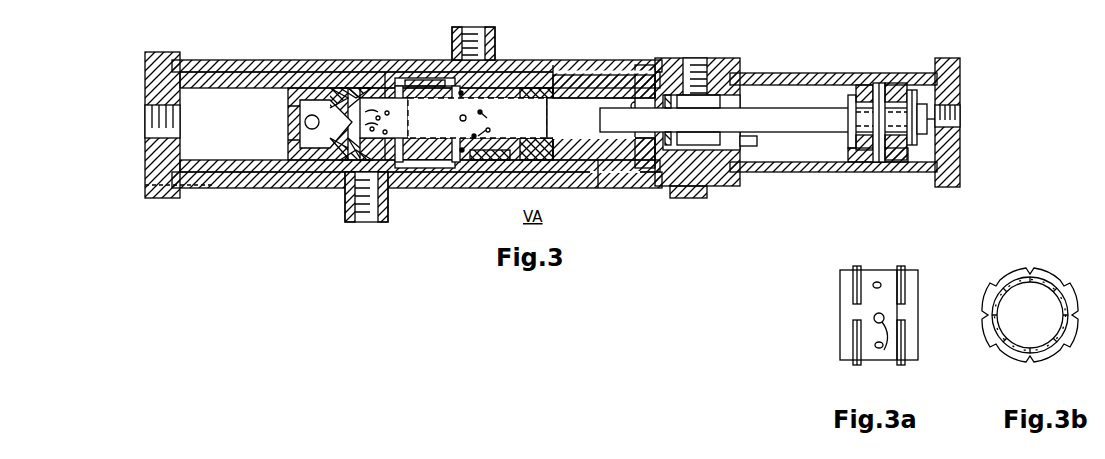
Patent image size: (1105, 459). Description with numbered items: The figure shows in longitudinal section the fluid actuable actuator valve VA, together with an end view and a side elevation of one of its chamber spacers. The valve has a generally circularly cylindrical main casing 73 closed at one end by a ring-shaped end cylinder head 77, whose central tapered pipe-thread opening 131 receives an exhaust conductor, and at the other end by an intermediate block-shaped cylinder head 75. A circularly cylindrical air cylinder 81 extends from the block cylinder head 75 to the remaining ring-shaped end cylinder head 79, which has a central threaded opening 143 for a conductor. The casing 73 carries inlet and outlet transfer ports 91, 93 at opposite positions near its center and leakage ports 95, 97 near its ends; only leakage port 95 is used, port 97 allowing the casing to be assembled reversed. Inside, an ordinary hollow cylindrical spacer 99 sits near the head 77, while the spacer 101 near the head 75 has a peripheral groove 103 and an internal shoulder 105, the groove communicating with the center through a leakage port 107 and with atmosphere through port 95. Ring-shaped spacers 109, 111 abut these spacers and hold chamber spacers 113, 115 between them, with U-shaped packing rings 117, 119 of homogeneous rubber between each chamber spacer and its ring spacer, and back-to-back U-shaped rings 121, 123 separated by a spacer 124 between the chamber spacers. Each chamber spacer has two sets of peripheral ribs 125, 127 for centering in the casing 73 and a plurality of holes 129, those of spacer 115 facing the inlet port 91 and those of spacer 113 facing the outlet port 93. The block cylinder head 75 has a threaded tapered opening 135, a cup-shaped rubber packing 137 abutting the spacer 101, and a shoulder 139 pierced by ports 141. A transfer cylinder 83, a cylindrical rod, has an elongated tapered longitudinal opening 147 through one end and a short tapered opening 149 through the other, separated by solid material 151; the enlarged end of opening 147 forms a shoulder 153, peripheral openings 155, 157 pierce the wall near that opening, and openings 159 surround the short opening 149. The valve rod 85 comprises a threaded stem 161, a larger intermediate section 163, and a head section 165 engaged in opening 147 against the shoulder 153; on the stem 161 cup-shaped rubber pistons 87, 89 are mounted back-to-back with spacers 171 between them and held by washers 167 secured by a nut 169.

In FIG. 3, the main casing 73 is at (222, 182).
In FIG. 3, the intermediate block-shaped cylinder head 75 is at (718, 182).
In FIG. 3, the end cylinder head 77 is at (147, 68).
In FIG. 3, the end cylinder head 79 is at (958, 66).
In FIG. 3, the air cylinder 81 is at (907, 152).
In FIG. 3, the transfer cylinder 83 is at (477, 121).
In FIG. 3, the valve rod 85 is at (765, 114).
In FIG. 3, the cup-shaped piston 87 is at (858, 150).
In FIG. 3, the cup-shaped piston 89 is at (893, 84).
In FIG. 3, the inlet transfer port 91 is at (463, 27).
In FIG. 3, the outlet transfer port 93 is at (385, 214).
In FIG. 3, the leakage port 95 is at (599, 180).
In FIG. 3, the leakage port 97 is at (233, 62).
In FIG. 3, the spacer 99 is at (210, 162).
In FIG. 3, the spacer 101 is at (598, 99).
In FIG. 3, the groove 103 is at (582, 72).
In FIG. 3, the internal shoulder 105 is at (634, 108).
In FIG. 3, the leakage port 107 is at (603, 150).
In FIG. 3, the ring shaped spacer 109 is at (298, 148).
In FIG. 3, the ring shaped spacer 111 is at (533, 172).
In FIG. 3, the chamber spacer 113 is at (397, 170).
In FIG. 3a, the chamber spacer 113 is at (874, 278).
In FIG. 3b, the chamber spacer 113 is at (1030, 272).
In FIG. 3, the chamber spacer 115 is at (476, 166).
In FIG. 3b, the chamber spacer 115 is at (1030, 315).
In FIG. 3, the U-shaped packing ring 117 is at (326, 172).
In FIG. 3, the U-shaped packing ring 119 is at (510, 162).
In FIG. 3, the U-shaped ring 121 is at (393, 86).
In FIG. 3, the U-shaped ring 123 is at (425, 80).
In FIG. 3, the spacer 124 is at (400, 72).
In FIG. 3a, the peripheral ribs 125 is at (856, 366).
In FIG. 3a, the peripheral ribs 127 is at (901, 366).
In FIG. 3b, the peripheral ribs 127 is at (1046, 362).
In FIG. 3a, the holes 129 is at (883, 356).
In FIG. 3, the opening 131 is at (150, 128).
In FIG. 3, the threaded tapered opening 135 is at (697, 62).
In FIG. 3, the packing 137 is at (672, 105).
In FIG. 3, the shoulder 139 is at (718, 104).
In FIG. 3, the ports 141 is at (744, 142).
In FIG. 3, the central threaded opening 143 is at (950, 115).
In FIG. 3, the elongated longitudinal opening 147 is at (398, 118).
In FIG. 3, the short longitudinal opening 149 is at (302, 106).
In FIG. 3, the solid material 151 is at (342, 70).
In FIG. 3, the shoulder 153 is at (545, 136).
In FIG. 3, the peripheral opening 155 is at (372, 120).
In FIG. 3, the peripheral opening 157 is at (486, 118).
In FIG. 3, the openings 159 is at (305, 123).
In FIG. 3, the stem 161 is at (958, 112).
In FIG. 3, the intermediate section 163 is at (828, 130).
In FIG. 3, the head section 165 is at (548, 72).
In FIG. 3, the washers 167 is at (851, 95).
In FIG. 3, the nut 169 is at (913, 146).
In FIG. 3, the spacers 171 is at (880, 85).